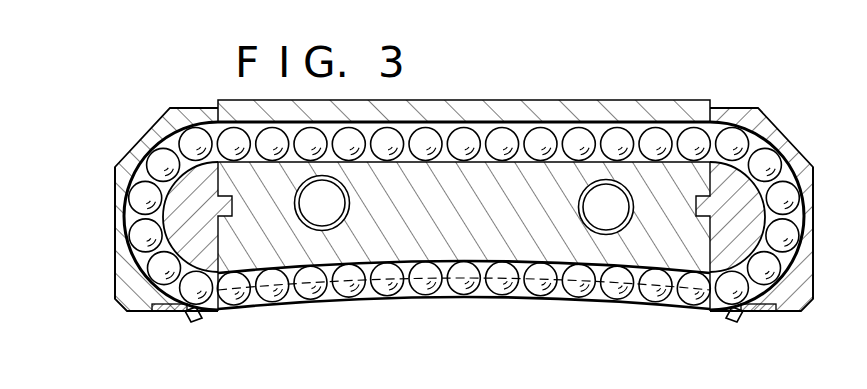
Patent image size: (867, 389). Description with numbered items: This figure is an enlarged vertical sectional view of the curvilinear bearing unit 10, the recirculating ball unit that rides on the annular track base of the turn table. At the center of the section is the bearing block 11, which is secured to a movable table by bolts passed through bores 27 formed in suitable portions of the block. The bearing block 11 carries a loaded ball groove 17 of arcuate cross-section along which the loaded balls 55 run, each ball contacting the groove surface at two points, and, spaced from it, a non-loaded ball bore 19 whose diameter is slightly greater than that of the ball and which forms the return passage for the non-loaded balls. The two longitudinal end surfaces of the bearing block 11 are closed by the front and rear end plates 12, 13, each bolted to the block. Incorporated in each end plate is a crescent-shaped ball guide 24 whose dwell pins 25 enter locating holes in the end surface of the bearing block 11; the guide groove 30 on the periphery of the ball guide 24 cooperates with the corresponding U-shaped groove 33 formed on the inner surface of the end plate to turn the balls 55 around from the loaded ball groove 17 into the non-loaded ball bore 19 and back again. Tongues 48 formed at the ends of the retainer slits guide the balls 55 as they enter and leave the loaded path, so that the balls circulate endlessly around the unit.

The linear ball bearing assembly 10 is at (728, 89).
The bearing block 11 is at (530, 100).
The front end plate 12 is at (790, 140).
The rear end plate 13 is at (150, 153).
The loaded ball groove 17 is at (406, 260).
The non-loaded ball bore 19 is at (482, 122).
The ball guide 24 is at (208, 220).
The dwell pin 25 is at (282, 268).
The bore 27 is at (338, 186).
The guide groove 30 is at (170, 252).
The U-shaped groove 33 is at (118, 168).
The tongue 48 is at (188, 321).
The ball 55 is at (540, 290).